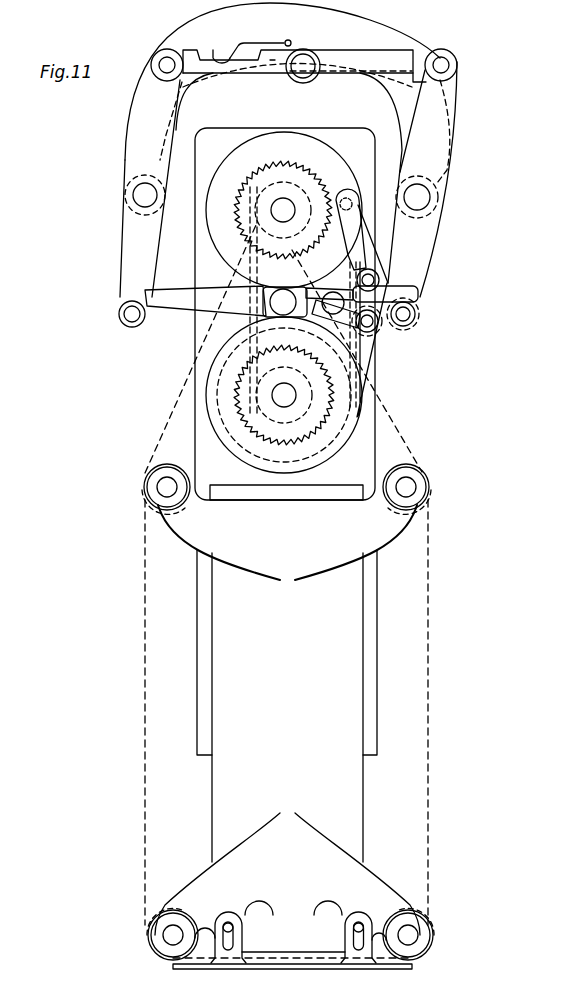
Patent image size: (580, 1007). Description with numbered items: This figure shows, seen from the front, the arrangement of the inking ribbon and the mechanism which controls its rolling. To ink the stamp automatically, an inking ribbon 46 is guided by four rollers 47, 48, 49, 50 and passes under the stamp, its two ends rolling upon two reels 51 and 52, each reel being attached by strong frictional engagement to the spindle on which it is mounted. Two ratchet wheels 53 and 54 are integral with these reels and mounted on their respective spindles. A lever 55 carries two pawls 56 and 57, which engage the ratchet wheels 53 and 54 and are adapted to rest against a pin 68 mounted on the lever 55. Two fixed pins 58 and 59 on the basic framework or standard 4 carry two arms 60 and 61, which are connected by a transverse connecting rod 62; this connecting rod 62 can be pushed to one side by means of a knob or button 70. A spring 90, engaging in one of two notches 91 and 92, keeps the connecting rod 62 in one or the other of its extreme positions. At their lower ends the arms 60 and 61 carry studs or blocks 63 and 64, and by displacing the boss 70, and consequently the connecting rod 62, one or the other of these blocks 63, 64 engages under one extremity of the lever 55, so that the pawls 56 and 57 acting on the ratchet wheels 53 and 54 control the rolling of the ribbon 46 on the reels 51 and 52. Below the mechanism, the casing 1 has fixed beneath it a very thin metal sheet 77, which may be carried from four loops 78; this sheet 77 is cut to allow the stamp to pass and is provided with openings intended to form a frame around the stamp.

The casing 1 is at (287, 720).
The basic framework or standard 4 is at (282, 81).
The inking ribbon 46 is at (183, 392).
The roller 47 is at (433, 935).
The roller 48 is at (148, 937).
The roller 49 is at (145, 485).
The roller 50 is at (426, 483).
The reel 51 is at (272, 210).
The reel 52 is at (282, 395).
The ratchet wheel 53 is at (243, 188).
The ratchet wheel 54 is at (247, 408).
The lever 55 is at (263, 302).
The pawl 56 is at (363, 238).
The pawl 57 is at (368, 353).
The fixed pin 58 is at (430, 197).
The fixed pin 59 is at (143, 193).
The arm 60 is at (408, 179).
The arm 61 is at (151, 188).
The transverse connecting rod 62 is at (304, 89).
The stud or block 63 is at (408, 313).
The stud or block 64 is at (125, 314).
The pin 68 is at (329, 301).
The knob or button 70 is at (303, 76).
The metal sheet 77 is at (302, 962).
The loops 78 is at (227, 922).
The spring 90 is at (254, 43).
The notch 91 is at (220, 55).
The notch 92 is at (270, 60).